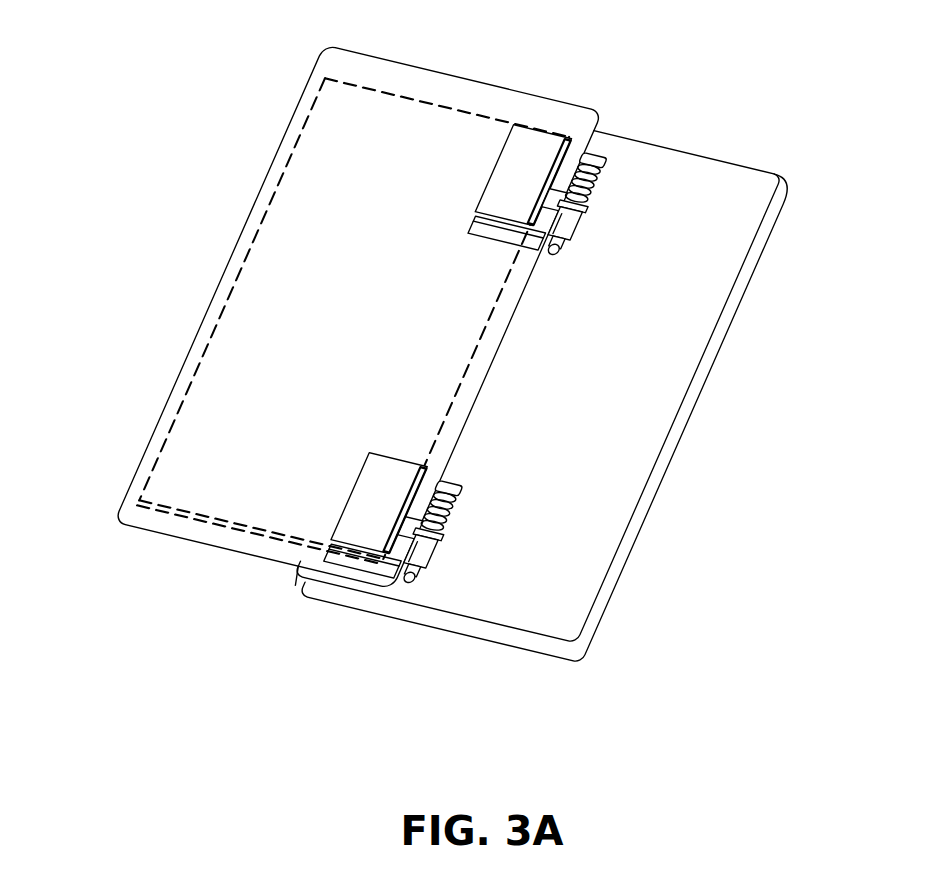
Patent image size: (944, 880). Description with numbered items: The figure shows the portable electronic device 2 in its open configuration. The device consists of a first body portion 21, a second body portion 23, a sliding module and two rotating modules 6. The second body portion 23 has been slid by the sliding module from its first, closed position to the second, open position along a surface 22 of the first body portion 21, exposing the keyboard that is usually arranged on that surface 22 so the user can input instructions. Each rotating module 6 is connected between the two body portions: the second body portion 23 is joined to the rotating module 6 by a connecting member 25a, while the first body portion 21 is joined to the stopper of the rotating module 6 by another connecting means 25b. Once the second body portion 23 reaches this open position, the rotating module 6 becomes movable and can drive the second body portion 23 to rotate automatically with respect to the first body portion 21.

The portable electronic device 2 is at (457, 383).
The rotating module 6 is at (602, 130).
The first body portion 21 is at (598, 634).
The surface 22 is at (732, 207).
The second body portion 23 is at (160, 533).
The connecting member 25a is at (347, 517).
The connecting means 25b is at (366, 572).